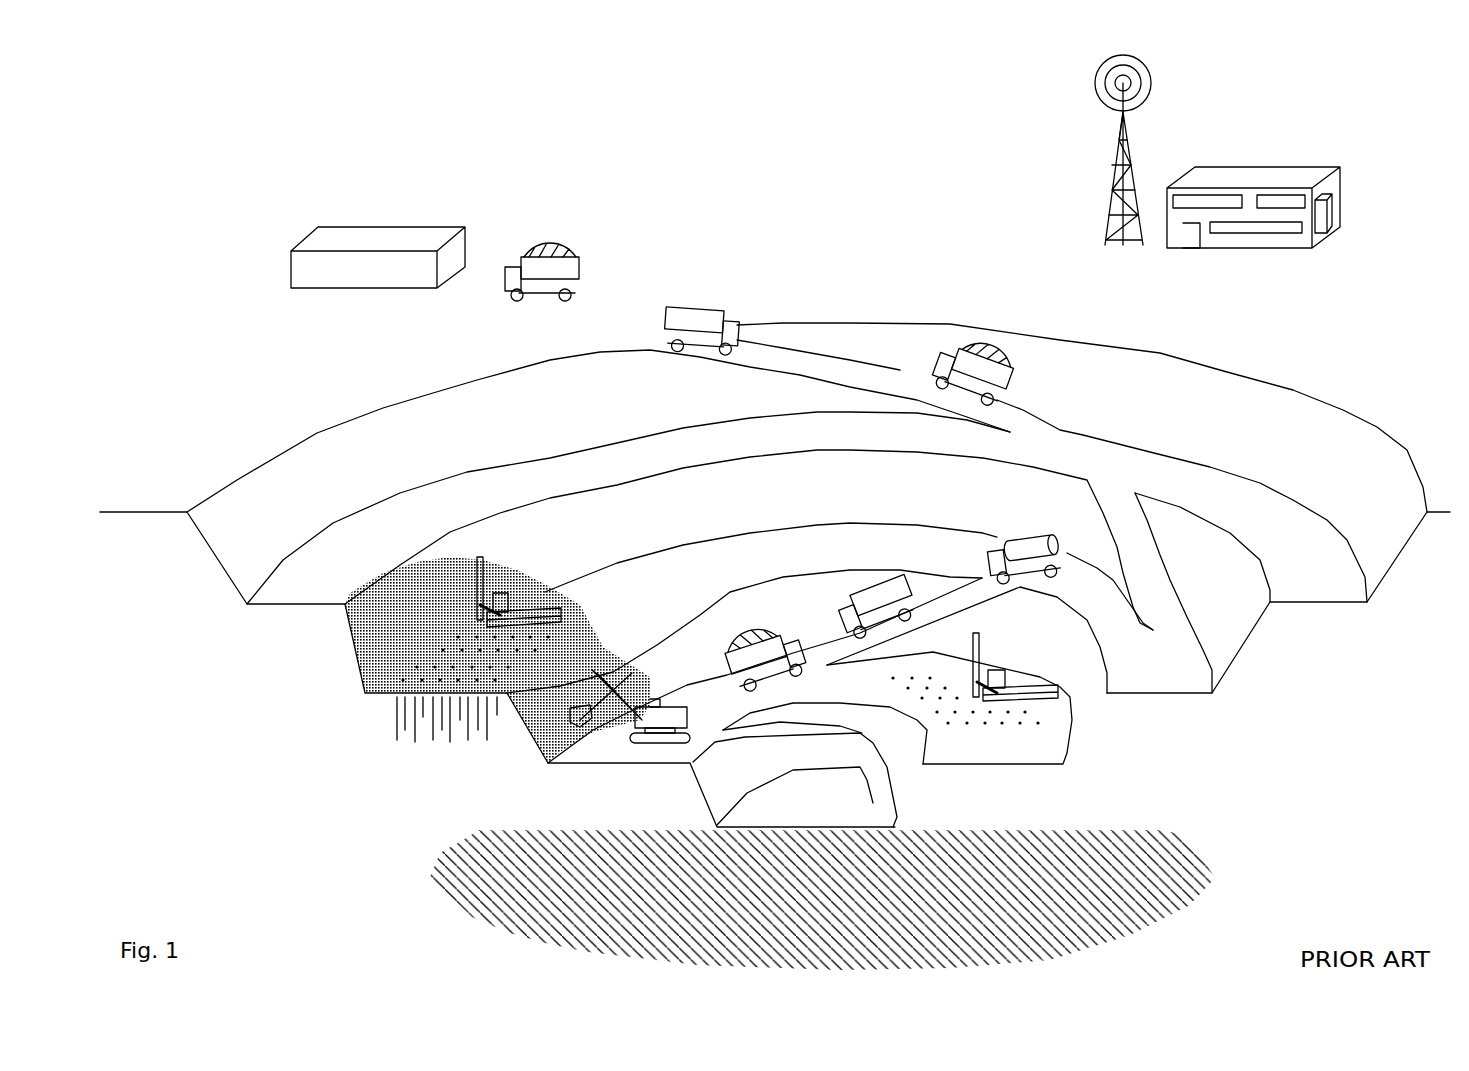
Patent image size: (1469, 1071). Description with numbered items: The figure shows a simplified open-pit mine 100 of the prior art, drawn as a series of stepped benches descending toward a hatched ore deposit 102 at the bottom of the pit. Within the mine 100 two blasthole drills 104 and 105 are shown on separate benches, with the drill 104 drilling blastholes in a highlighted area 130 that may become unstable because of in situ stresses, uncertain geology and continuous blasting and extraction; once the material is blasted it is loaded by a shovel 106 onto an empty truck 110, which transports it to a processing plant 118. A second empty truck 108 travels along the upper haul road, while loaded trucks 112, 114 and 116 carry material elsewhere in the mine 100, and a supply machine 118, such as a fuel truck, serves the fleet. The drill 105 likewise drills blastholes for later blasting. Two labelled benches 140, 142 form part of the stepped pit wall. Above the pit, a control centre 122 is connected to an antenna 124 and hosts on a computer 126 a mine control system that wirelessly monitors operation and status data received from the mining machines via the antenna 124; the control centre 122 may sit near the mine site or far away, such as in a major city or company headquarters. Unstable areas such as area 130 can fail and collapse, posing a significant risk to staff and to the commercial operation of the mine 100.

The open-pit mine 100 is at (258, 148).
The ore deposit 102 is at (1212, 903).
The blasthole drill 104 is at (543, 607).
The blasthole drill 105 is at (1037, 683).
The shovel 106 is at (660, 703).
The empty truck 108 is at (702, 312).
The empty truck 110 is at (842, 622).
The loaded truck 112 is at (543, 250).
The loaded truck 114 is at (1010, 368).
The loaded truck 116 is at (787, 677).
The supply machine 118 is at (407, 228).
The control centre 122 is at (1270, 165).
The antenna 124 is at (1117, 158).
The computer 126 is at (1332, 208).
The unstable area 130 is at (390, 638).
The bench 140 is at (1168, 687).
The bench 142 is at (1005, 757).